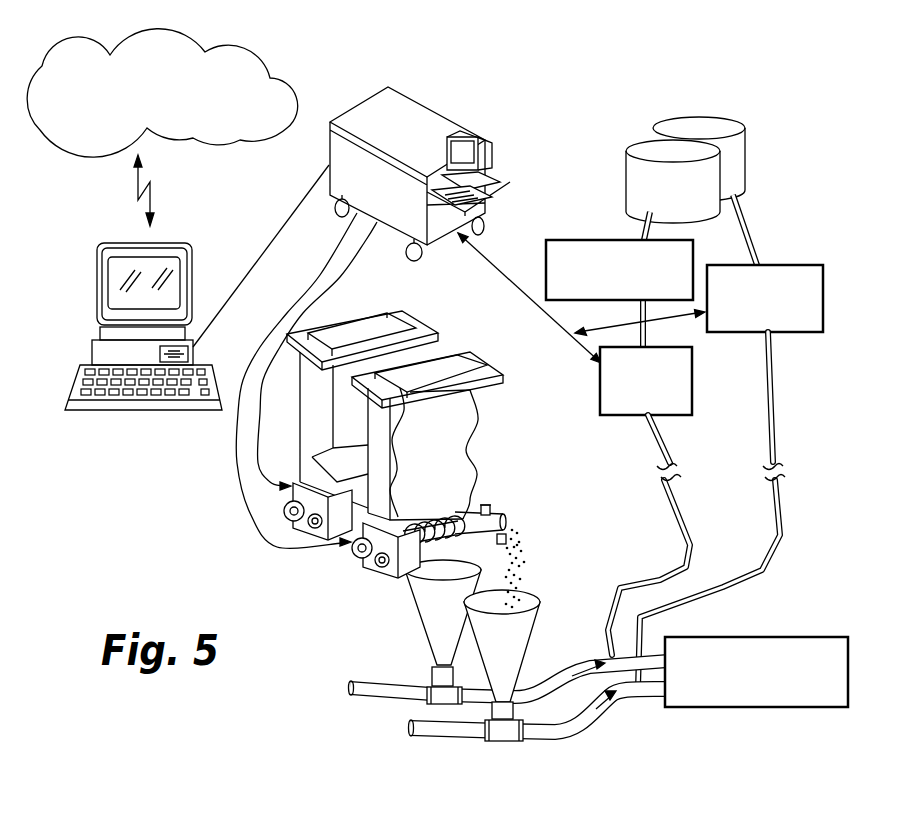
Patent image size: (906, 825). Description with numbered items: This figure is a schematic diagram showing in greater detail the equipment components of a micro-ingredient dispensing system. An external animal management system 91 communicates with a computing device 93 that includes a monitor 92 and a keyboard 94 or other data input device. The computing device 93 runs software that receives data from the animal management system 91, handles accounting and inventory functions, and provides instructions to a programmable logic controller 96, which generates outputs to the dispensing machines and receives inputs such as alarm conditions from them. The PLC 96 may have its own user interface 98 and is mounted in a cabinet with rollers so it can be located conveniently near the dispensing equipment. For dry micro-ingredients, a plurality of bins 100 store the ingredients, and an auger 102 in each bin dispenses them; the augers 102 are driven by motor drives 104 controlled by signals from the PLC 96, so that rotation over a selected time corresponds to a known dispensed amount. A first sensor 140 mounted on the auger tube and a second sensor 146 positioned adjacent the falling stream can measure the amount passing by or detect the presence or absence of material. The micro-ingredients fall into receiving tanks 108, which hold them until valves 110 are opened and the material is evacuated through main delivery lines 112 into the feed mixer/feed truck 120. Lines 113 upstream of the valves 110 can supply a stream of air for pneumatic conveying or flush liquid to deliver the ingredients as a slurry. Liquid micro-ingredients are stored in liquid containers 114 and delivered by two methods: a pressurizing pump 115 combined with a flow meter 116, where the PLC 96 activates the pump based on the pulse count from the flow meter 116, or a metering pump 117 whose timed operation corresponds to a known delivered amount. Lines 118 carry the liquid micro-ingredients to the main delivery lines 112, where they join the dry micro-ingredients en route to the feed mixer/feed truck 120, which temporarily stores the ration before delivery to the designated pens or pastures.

The external animal management system 91 is at (247, 45).
The monitor 92 is at (167, 243).
The computing device 93 is at (105, 352).
The keyboard 94 is at (100, 377).
The programmable logic controller 96 is at (418, 123).
The user interface 98 is at (495, 147).
The bins 100 is at (470, 368).
The auger 102 is at (423, 530).
The motor drives 104 is at (322, 523).
The receiving tanks 108 is at (437, 623).
The valves 110 is at (437, 695).
The main delivery lines 112 is at (520, 697).
The lines 113 is at (350, 685).
The liquid containers 114 is at (713, 130).
The pressurizing pump 115 is at (598, 240).
The flow meter 116 is at (600, 382).
The metering pump 117 is at (797, 263).
The lines 118 is at (685, 518).
The feed mixer/feed truck 120 is at (823, 688).
The first sensor 140 is at (486, 505).
The second sensor 146 is at (507, 538).